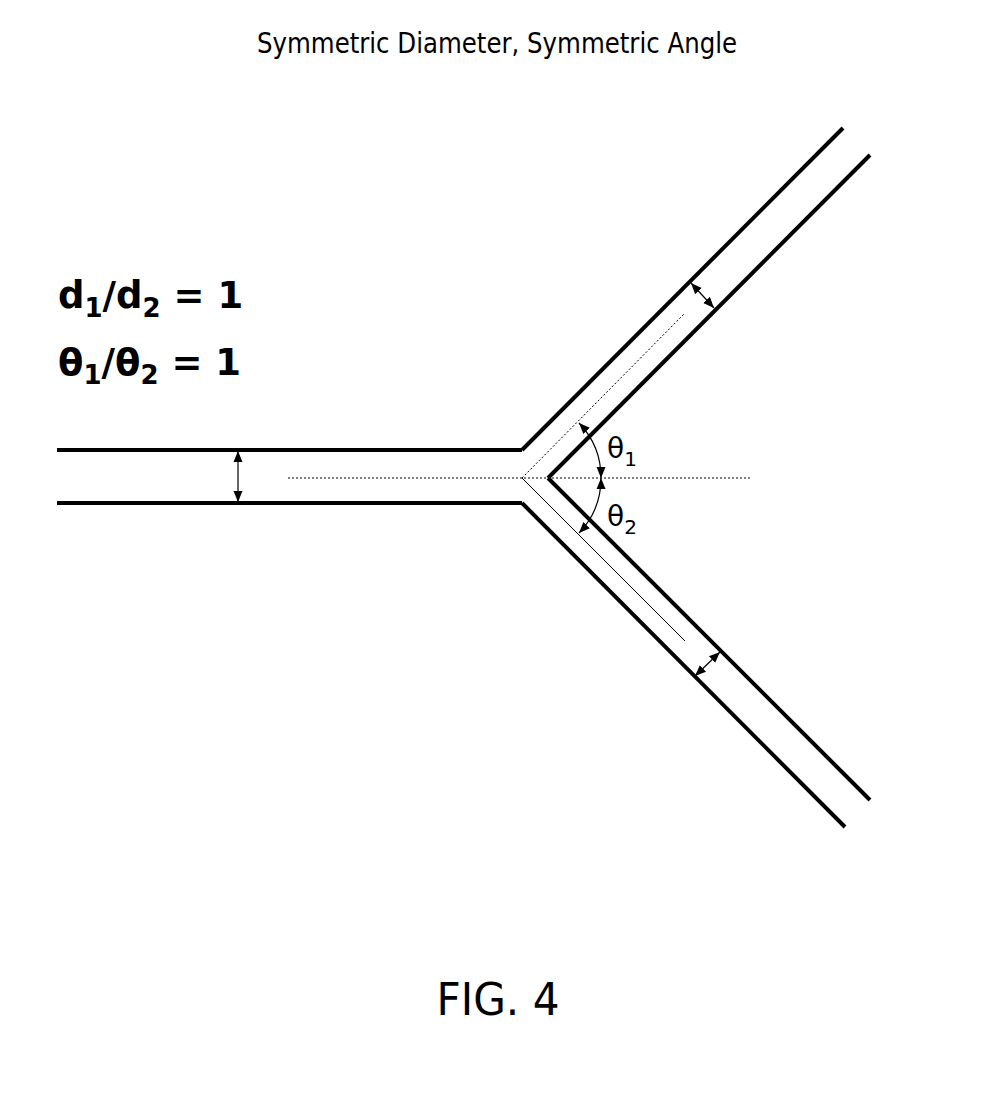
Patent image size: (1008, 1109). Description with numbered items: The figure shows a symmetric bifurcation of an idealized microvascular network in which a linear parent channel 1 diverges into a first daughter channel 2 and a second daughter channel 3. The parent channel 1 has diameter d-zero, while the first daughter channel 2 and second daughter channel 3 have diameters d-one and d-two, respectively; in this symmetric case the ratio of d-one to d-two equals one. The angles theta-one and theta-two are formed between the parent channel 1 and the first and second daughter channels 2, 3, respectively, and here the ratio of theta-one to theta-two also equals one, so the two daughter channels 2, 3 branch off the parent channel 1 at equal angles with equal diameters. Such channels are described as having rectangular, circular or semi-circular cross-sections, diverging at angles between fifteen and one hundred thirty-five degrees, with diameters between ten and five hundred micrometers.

The parent channel 1 is at (122, 487).
The first daughter channel 2 is at (792, 205).
The second daughter channel 3 is at (780, 732).